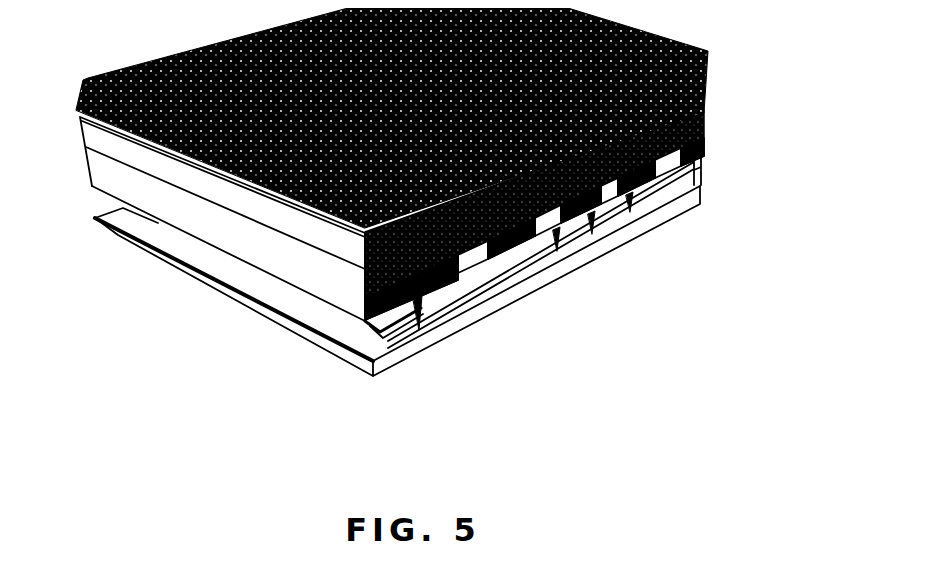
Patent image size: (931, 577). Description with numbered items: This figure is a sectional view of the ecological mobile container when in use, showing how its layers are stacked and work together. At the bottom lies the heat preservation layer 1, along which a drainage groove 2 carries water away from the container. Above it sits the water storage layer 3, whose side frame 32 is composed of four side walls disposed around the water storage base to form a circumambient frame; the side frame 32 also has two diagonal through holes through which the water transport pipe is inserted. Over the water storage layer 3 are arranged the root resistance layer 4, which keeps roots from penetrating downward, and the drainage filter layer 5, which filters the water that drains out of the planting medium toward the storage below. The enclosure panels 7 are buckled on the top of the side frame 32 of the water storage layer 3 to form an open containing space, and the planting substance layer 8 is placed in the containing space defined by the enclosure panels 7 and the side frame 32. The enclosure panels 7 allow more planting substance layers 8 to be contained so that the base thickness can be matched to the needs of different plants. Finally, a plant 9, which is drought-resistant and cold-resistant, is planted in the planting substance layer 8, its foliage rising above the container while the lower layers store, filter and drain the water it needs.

The heat preservation layer 1 is at (593, 227).
The drainage groove 2 is at (383, 318).
The water storage layer 3 is at (695, 177).
The root resistance layer 4 is at (693, 137).
The drainage filter layer 5 is at (693, 117).
The enclosure panels 7 is at (227, 185).
The planting substance layer 8 is at (700, 92).
The plant 9 is at (702, 53).
The side frame 32 is at (297, 257).